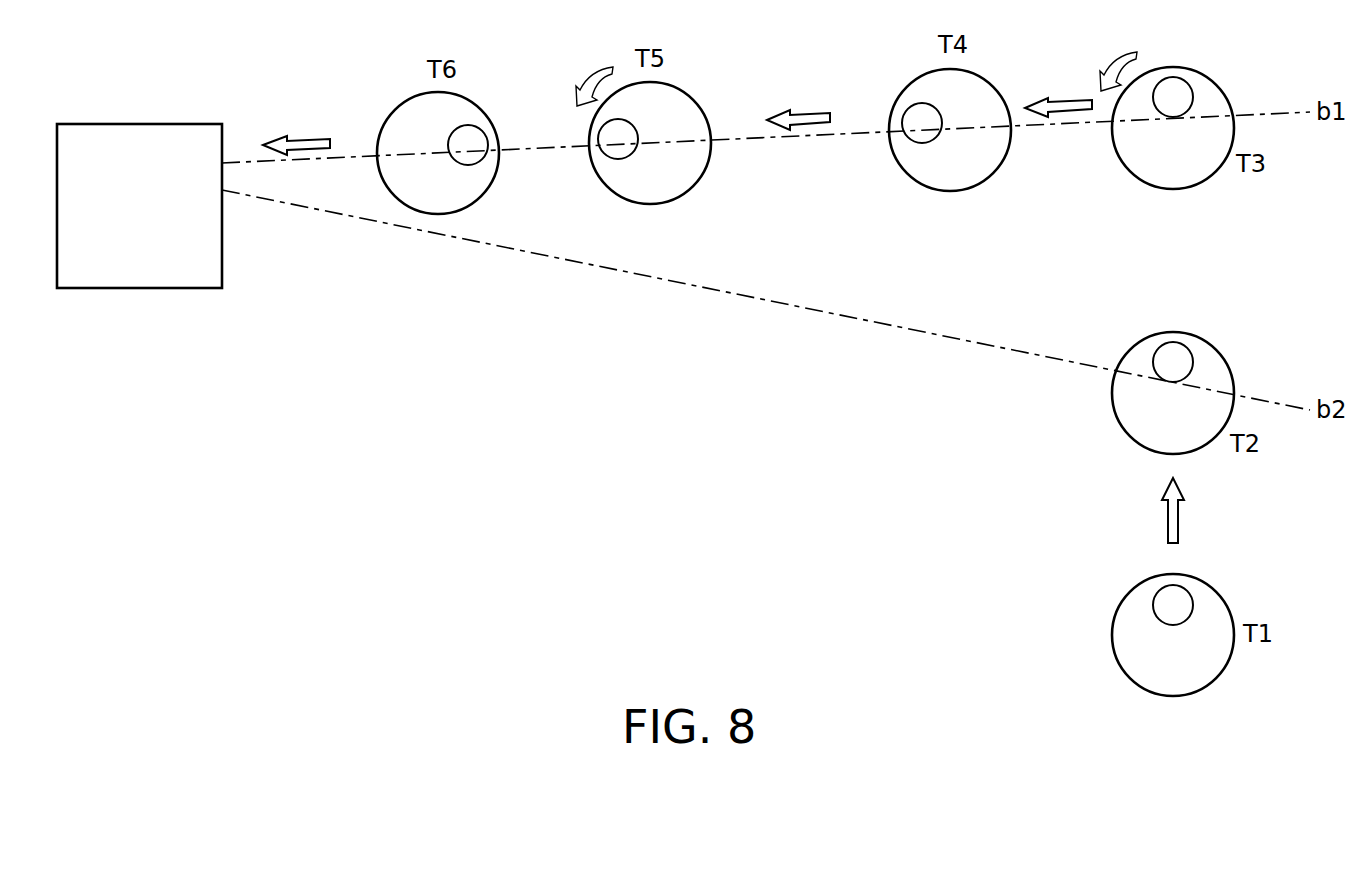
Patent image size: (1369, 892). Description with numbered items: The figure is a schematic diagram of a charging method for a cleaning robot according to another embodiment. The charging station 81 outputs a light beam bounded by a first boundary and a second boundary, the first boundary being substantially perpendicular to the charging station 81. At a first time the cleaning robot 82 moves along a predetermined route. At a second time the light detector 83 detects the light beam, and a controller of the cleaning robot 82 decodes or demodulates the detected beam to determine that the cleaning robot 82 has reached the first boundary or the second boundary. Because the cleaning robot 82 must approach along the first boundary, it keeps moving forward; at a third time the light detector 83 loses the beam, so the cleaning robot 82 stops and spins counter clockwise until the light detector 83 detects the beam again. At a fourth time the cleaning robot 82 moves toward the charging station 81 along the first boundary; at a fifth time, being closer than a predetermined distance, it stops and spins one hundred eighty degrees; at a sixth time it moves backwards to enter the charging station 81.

The charging station 81 is at (127, 253).
The cleaning robot 82 is at (485, 192).
The light detector 83 is at (478, 128).